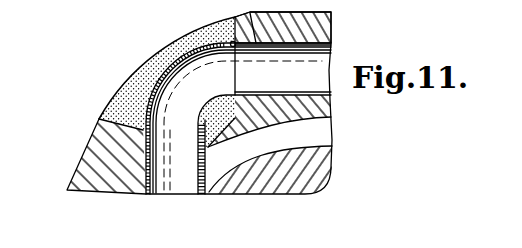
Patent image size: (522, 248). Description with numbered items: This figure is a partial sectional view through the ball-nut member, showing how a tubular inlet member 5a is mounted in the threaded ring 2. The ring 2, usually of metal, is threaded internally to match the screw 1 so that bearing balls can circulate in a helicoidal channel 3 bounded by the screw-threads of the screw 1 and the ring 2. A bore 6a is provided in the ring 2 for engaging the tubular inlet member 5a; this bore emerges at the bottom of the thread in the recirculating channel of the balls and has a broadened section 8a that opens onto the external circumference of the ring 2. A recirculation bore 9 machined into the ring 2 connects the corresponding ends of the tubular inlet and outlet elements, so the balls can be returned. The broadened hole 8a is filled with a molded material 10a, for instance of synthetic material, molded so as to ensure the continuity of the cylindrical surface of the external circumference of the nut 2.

The screw 1 is at (325, 170).
The threaded ring 2 is at (326, 22).
The helicoidal channel 3 is at (320, 125).
The recirculation bore 9 is at (250, 13).
The tubular inlet member 5a is at (158, 58).
The bore 6a is at (146, 165).
The broadened section 8a is at (99, 119).
The molded material 10a is at (133, 88).